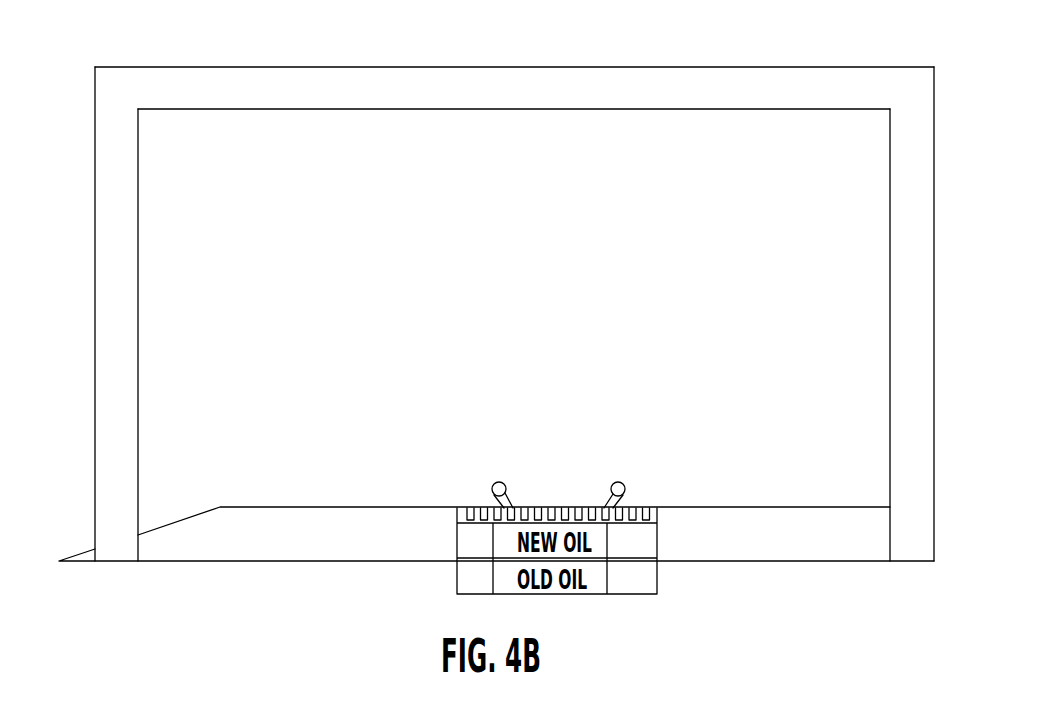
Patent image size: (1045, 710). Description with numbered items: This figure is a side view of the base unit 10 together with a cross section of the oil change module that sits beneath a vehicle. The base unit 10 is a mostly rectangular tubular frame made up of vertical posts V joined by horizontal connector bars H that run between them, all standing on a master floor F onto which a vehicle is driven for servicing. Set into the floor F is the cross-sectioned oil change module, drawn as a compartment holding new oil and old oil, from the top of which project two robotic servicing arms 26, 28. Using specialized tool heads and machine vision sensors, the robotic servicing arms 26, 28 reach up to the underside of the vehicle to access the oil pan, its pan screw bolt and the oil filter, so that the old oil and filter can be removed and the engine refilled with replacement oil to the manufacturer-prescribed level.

The base unit 10 is at (84, 43).
The horizontal connector bars H is at (382, 76).
The vertical posts V is at (127, 313).
The master floor F is at (290, 514).
The robotic servicing arm 28 is at (504, 487).
The robotic servicing arm 26 is at (626, 489).